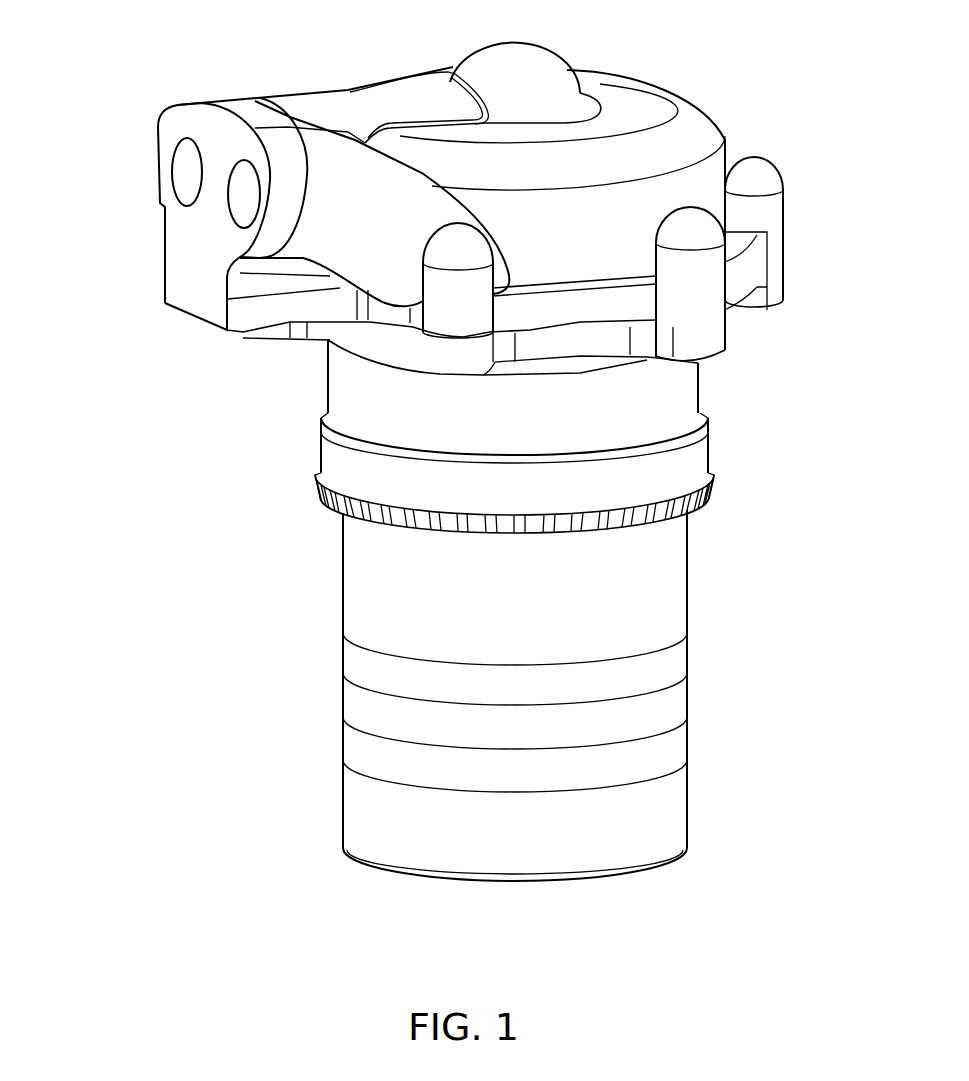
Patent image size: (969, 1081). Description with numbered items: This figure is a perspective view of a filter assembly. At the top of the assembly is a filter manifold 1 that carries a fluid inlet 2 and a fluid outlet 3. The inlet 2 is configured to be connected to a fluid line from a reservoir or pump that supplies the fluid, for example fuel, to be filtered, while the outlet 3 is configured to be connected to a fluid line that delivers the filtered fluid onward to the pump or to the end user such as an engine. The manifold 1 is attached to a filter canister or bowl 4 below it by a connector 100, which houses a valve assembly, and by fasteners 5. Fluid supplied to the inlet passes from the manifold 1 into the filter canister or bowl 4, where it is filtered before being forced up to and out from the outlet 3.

The filter manifold 1 is at (607, 70).
The fluid inlet 2 is at (185, 171).
The fluid outlet 3 is at (245, 206).
The filter canister or bowl 4 is at (667, 593).
The fasteners 5 is at (757, 167).
The connector 100 is at (687, 401).